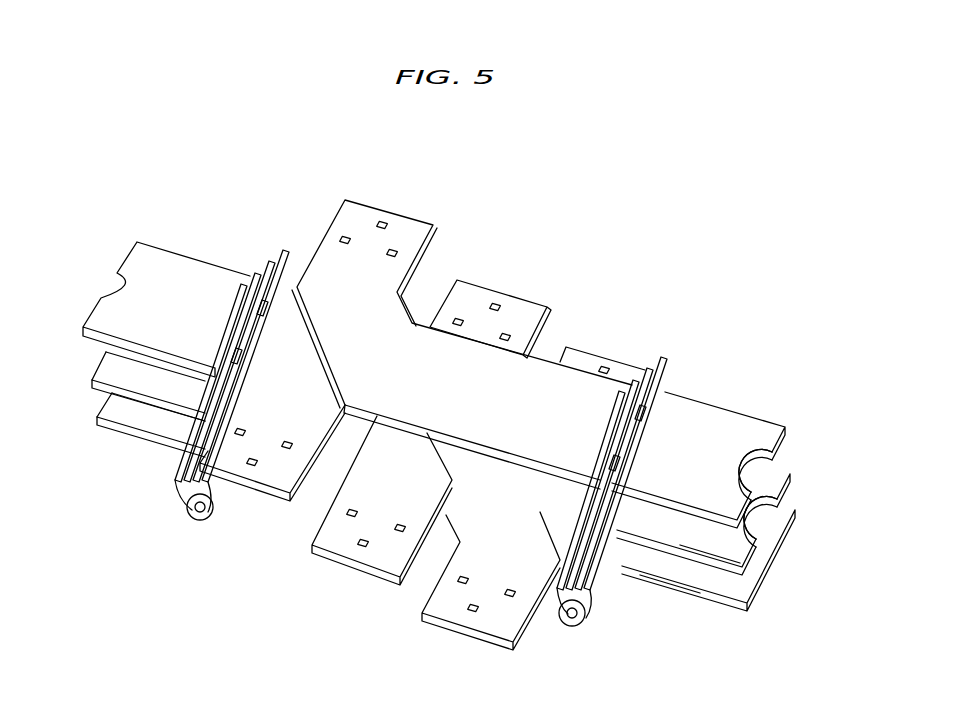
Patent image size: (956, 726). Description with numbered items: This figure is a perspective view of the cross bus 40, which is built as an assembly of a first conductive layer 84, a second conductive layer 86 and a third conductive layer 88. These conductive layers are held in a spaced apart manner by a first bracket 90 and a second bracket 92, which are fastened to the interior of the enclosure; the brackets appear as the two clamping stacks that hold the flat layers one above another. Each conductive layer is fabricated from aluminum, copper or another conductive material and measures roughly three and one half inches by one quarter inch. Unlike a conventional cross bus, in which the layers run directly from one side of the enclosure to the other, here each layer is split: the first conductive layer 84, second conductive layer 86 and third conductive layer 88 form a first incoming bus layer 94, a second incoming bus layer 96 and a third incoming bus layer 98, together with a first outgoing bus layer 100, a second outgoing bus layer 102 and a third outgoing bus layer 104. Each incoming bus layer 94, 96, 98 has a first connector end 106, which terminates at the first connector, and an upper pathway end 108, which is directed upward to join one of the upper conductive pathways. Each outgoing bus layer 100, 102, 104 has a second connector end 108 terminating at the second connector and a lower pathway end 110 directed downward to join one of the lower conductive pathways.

The cross bus 40 is at (568, 226).
The first conductive layer 84 is at (712, 396).
The second conductive layer 86 is at (776, 487).
The third conductive layer 88 is at (780, 524).
The first bracket 90 is at (276, 248).
The second bracket 92 is at (662, 364).
The first incoming bus layer 94 is at (523, 378).
The second incoming bus layer 96 is at (683, 540).
The third incoming bus layer 98 is at (627, 557).
The first outgoing bus layer 100 is at (172, 258).
The second outgoing bus layer 102 is at (140, 380).
The third outgoing bus layer 104 is at (173, 423).
The first connector end 106 is at (762, 428).
The upper pathway end 108 is at (128, 257).
The lower pathway end 110 is at (278, 473).